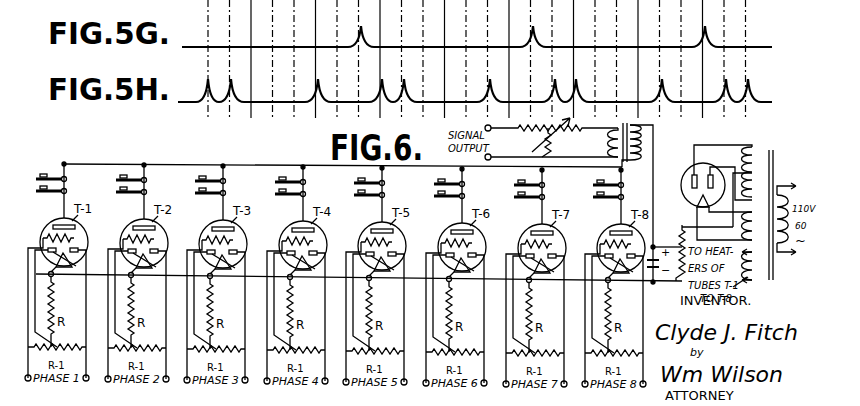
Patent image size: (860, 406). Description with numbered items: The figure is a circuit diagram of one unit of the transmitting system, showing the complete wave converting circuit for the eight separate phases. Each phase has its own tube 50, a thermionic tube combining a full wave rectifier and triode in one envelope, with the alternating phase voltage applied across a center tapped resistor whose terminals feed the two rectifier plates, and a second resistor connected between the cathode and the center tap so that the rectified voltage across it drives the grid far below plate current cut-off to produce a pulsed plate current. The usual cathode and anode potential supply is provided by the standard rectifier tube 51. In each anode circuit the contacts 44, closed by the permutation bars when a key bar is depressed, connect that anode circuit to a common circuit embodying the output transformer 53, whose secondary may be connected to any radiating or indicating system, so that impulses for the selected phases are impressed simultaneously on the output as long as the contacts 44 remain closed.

The contacts 44 is at (38, 181).
The tube 50 is at (43, 232).
The rectifier tube 51 is at (681, 170).
The output transformer 53 is at (607, 139).